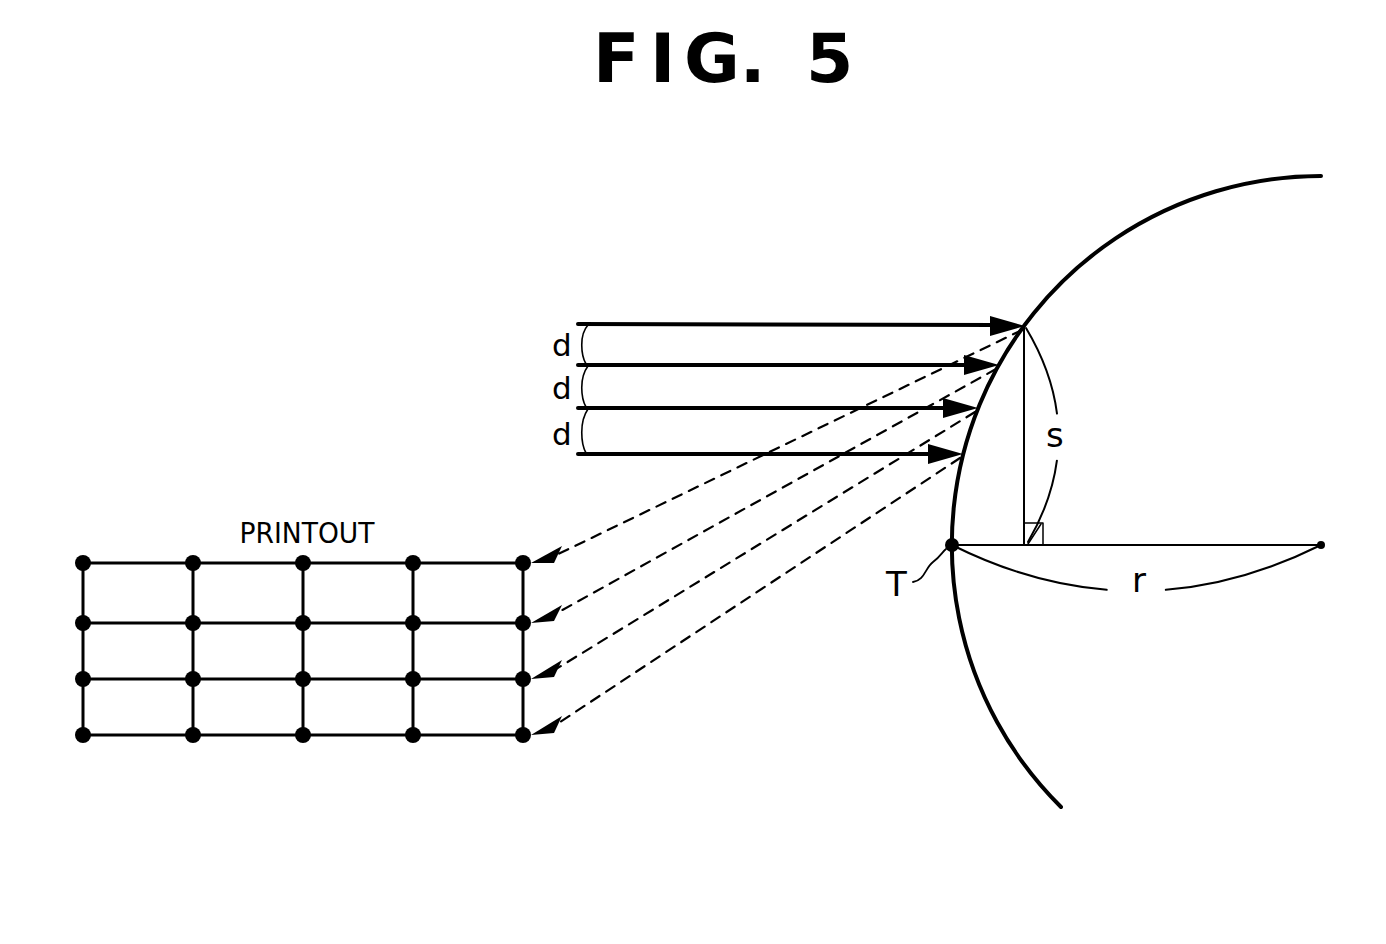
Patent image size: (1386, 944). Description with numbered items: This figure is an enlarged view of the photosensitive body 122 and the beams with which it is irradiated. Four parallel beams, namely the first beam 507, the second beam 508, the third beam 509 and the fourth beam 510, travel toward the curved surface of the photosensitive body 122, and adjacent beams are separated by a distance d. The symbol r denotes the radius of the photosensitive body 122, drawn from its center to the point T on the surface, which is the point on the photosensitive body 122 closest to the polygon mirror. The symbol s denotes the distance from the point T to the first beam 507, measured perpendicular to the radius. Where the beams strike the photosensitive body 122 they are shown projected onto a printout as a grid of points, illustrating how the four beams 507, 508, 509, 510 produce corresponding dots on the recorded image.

The photosensitive body 122 is at (988, 713).
The first beam 507 is at (865, 324).
The second beam 508 is at (788, 365).
The third beam 509 is at (710, 408).
The fourth beam 510 is at (633, 454).